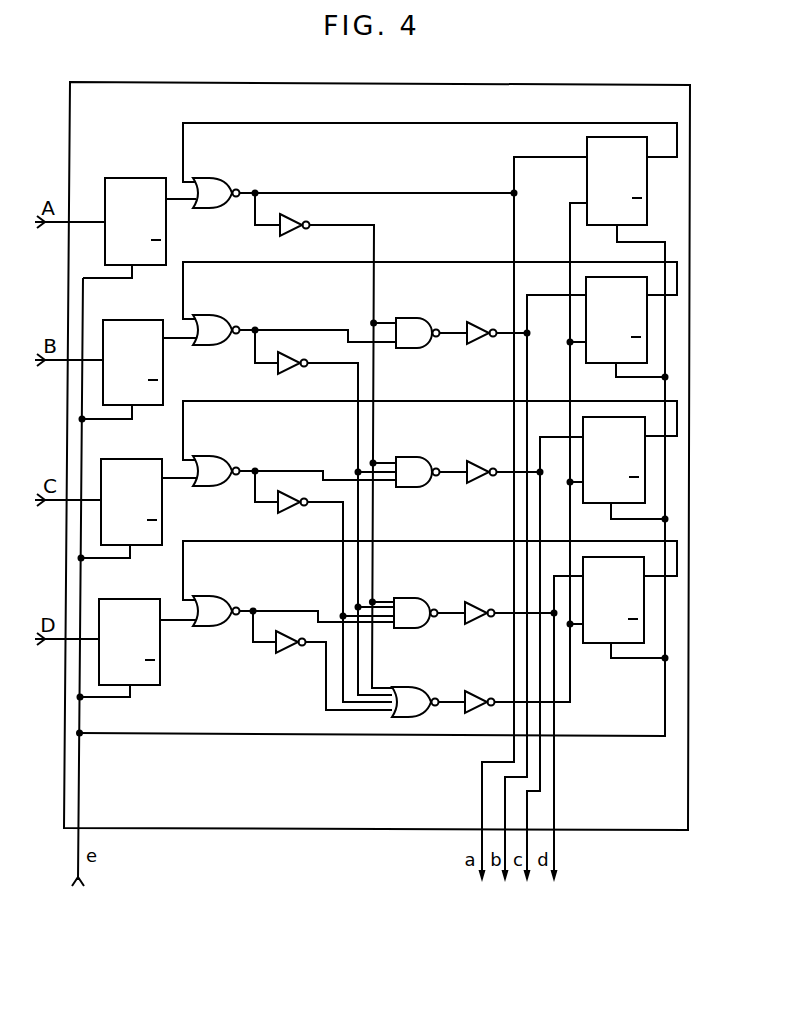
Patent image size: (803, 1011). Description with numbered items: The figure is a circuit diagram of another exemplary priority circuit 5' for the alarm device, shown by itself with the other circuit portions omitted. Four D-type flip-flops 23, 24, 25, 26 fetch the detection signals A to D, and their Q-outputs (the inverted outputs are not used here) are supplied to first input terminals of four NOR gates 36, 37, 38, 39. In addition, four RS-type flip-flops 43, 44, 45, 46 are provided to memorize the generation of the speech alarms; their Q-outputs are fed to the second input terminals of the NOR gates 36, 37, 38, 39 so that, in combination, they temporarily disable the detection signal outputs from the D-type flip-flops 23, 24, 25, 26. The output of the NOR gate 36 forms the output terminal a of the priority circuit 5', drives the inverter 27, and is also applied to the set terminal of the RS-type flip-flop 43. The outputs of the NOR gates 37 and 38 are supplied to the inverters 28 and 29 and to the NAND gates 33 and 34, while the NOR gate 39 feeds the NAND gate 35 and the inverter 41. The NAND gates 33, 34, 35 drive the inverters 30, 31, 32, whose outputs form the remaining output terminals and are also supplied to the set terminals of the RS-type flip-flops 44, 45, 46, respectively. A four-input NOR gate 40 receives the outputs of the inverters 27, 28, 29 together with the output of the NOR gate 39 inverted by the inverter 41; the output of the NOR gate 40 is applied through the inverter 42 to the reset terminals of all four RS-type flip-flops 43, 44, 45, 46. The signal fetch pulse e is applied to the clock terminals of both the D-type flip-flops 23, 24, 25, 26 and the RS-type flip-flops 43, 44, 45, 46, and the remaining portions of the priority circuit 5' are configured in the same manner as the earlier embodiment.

The priority circuit 5' is at (377, 421).
The D-type flip-flop 23 is at (128, 178).
The D-type flip-flop 24 is at (130, 320).
The D-type flip-flop 25 is at (128, 459).
The D-type flip-flop 26 is at (128, 599).
The inverter 27 is at (299, 216).
The inverter 28 is at (298, 370).
The inverter 29 is at (298, 509).
The inverter 30 is at (478, 322).
The inverter 31 is at (480, 462).
The inverter 32 is at (480, 602).
The NAND gate 33 is at (418, 318).
The NAND gate 34 is at (418, 457).
The NAND gate 35 is at (417, 598).
The NOR gate 36 is at (218, 178).
The NOR gate 37 is at (218, 315).
The NOR gate 38 is at (220, 456).
The NOR gate 39 is at (218, 596).
The NOR gate 40 is at (417, 687).
The inverter 41 is at (288, 650).
The inverter 42 is at (480, 691).
The RS-type flip-flop 43 is at (586, 150).
The RS-type flip-flop 44 is at (604, 277).
The RS-type flip-flop 45 is at (612, 417).
The RS-type flip-flop 46 is at (607, 557).